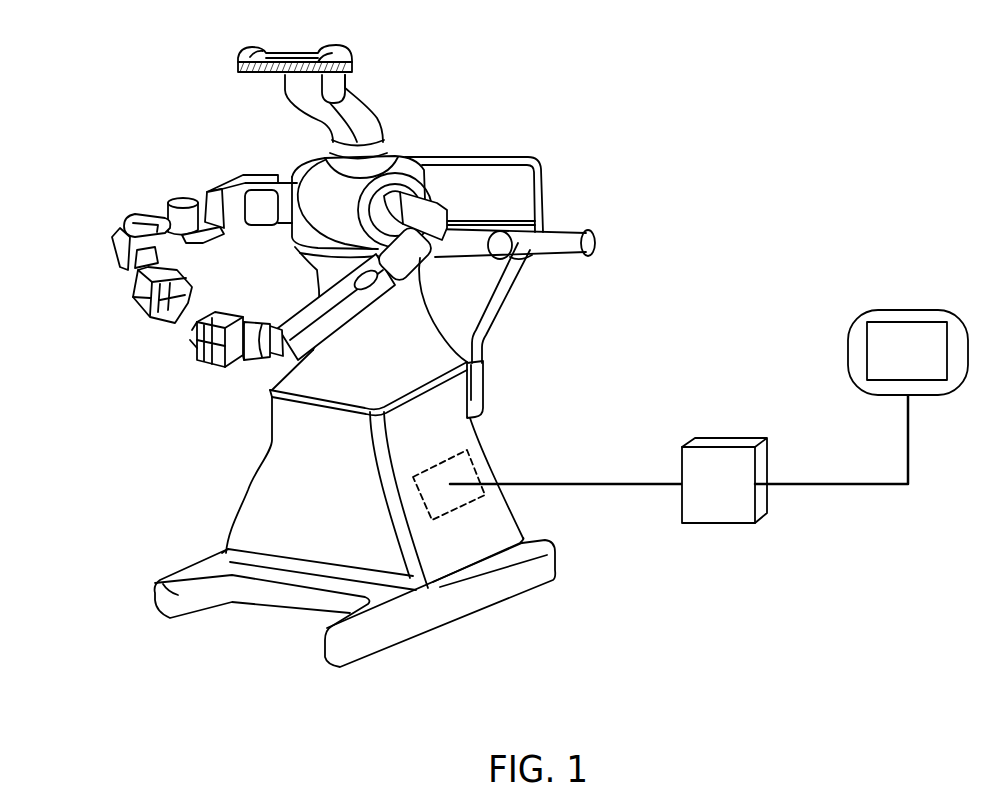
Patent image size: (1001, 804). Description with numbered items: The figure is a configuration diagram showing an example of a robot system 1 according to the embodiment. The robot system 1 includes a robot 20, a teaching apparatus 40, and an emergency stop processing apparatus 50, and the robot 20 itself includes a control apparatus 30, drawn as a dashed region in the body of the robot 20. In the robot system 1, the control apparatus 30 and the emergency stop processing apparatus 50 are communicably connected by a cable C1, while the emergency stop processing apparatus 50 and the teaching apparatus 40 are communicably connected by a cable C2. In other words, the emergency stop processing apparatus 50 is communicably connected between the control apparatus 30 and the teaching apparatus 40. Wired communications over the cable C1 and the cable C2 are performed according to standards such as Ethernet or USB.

The robot system 1 is at (706, 164).
The robot 20 is at (484, 97).
The control apparatus 30 is at (473, 468).
The teaching apparatus 40 is at (905, 310).
The emergency stop processing apparatus 50 is at (726, 437).
The cable C1 is at (627, 481).
The cable C2 is at (835, 481).